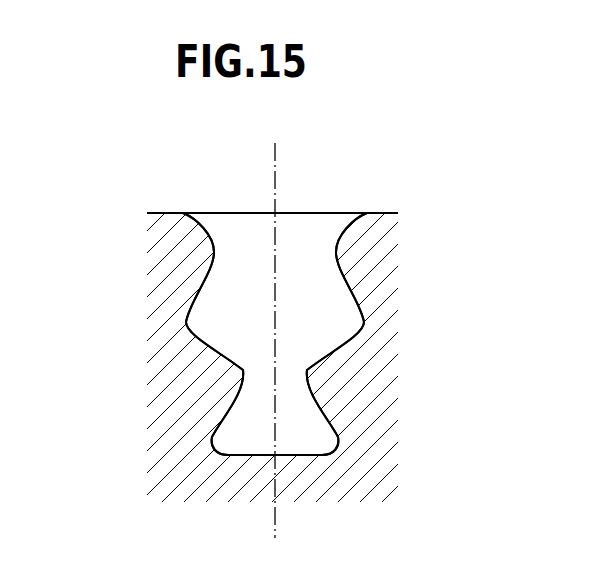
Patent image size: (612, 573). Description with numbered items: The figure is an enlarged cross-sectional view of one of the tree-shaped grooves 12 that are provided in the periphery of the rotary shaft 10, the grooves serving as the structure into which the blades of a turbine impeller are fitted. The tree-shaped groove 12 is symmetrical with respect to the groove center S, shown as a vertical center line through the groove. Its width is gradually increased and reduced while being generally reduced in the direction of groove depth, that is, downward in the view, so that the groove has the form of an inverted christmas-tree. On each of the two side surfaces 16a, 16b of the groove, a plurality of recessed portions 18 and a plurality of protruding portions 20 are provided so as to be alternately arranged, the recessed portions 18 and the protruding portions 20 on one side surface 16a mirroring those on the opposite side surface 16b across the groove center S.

The rotary shaft 10 is at (170, 226).
The tree-shaped groove 12 is at (357, 140).
The side surface 16a is at (229, 230).
The side surface 16b is at (323, 233).
The recessed portions 18 is at (186, 325).
The protruding portions 20 is at (212, 244).
The groove center S is at (273, 328).